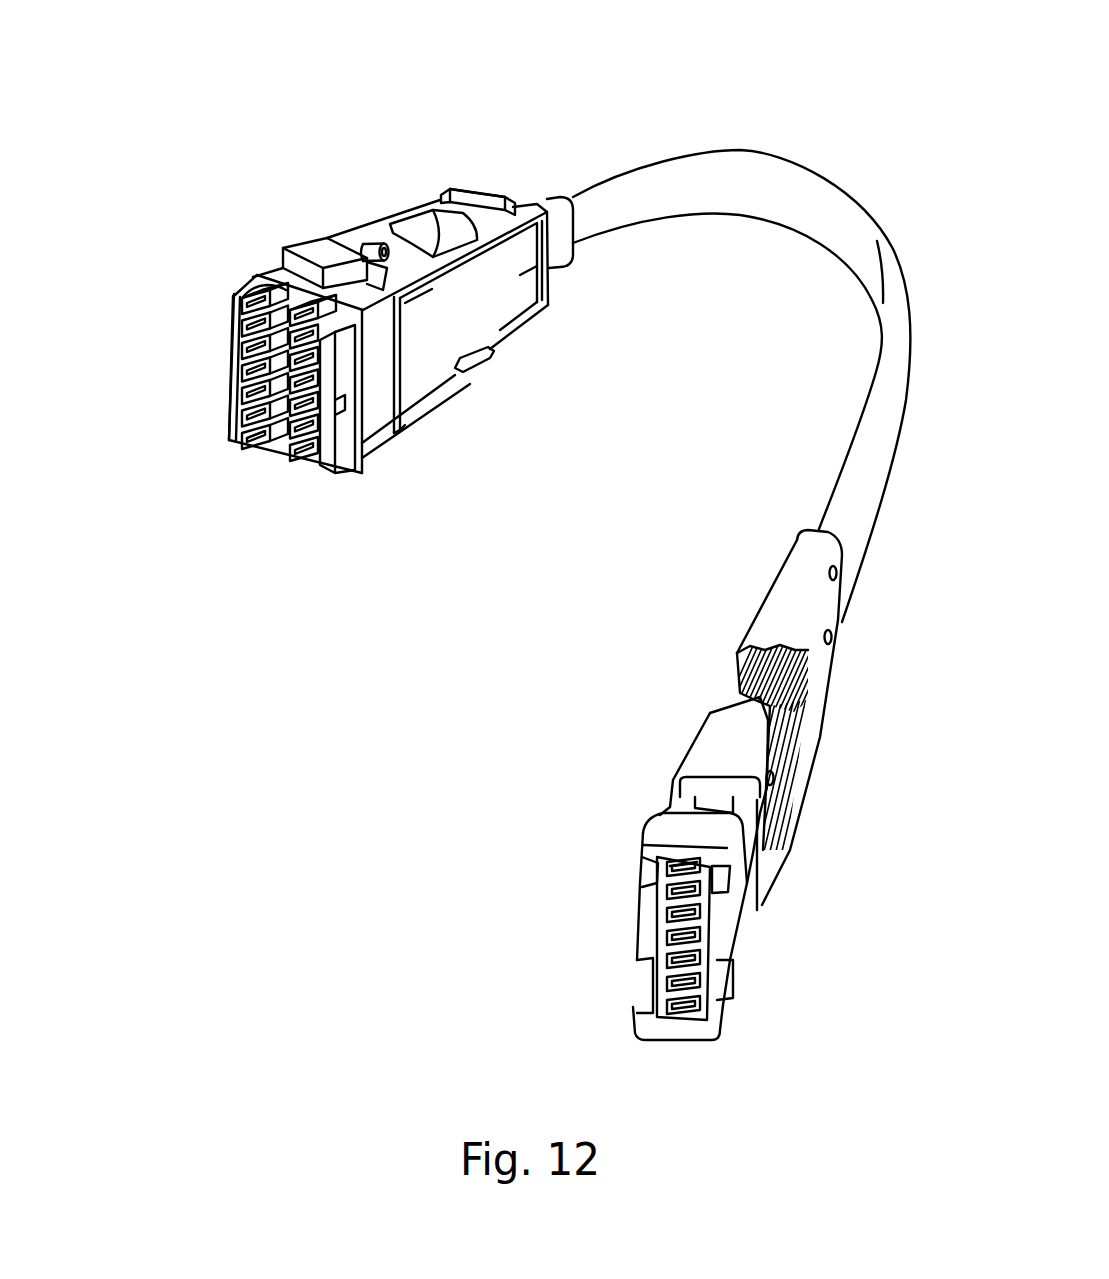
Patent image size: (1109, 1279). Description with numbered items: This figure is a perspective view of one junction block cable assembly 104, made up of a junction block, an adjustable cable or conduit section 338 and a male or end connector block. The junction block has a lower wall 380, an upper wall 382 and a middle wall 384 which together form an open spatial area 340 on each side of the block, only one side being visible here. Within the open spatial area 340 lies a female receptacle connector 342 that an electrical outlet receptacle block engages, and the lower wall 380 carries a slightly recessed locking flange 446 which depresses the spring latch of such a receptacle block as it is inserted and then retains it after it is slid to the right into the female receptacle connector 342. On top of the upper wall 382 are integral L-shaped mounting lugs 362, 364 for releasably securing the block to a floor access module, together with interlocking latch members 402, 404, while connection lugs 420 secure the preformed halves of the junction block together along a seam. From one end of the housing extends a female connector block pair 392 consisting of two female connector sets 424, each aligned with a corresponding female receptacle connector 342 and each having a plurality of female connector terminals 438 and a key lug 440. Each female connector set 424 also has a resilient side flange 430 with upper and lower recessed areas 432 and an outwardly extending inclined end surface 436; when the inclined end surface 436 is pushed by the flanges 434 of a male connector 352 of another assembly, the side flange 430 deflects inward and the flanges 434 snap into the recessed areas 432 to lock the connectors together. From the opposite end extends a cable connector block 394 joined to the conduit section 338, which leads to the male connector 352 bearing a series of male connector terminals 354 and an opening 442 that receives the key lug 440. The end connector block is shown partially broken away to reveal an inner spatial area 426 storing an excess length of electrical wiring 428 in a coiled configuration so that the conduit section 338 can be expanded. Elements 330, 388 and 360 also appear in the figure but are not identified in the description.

The junction block cable assembly 104 is at (843, 118).
The adjustable cable or conduit section 338 is at (717, 150).
The first connector 330 is at (481, 174).
The open spatial area 340 is at (440, 345).
The middle wall 384 is at (460, 319).
The cable connector block 394 is at (550, 241).
The inner wall 388 is at (533, 265).
The lower wall 380 is at (522, 313).
The locking flange 446 is at (492, 353).
The female receptacle connector 342 is at (396, 385).
The side flange 430 is at (345, 422).
The upper and lower recessed areas 432 is at (345, 422).
The inclined end surface 436 is at (233, 314).
The female connector block pair 392 is at (203, 412).
The female connector set 424 is at (222, 442).
The key lug 440 is at (254, 293).
The female connector terminals 438 is at (247, 442).
The L-shaped mounting lug 364 is at (300, 250).
The connection lugs 420 is at (360, 240).
The interlocking latch member 402 is at (407, 210).
The interlocking latch member 404 is at (453, 238).
The upper wall 382 is at (441, 197).
The L-shaped mounting lug 362 is at (467, 192).
The crimp ferrule 360 is at (795, 692).
The excess length of electrical wiring 428 is at (790, 681).
The inner spatial area 426 is at (781, 831).
The male connector 352 is at (702, 843).
The flanges 434 is at (640, 873).
The male connector terminals 354 is at (677, 967).
The opening 442 is at (667, 880).